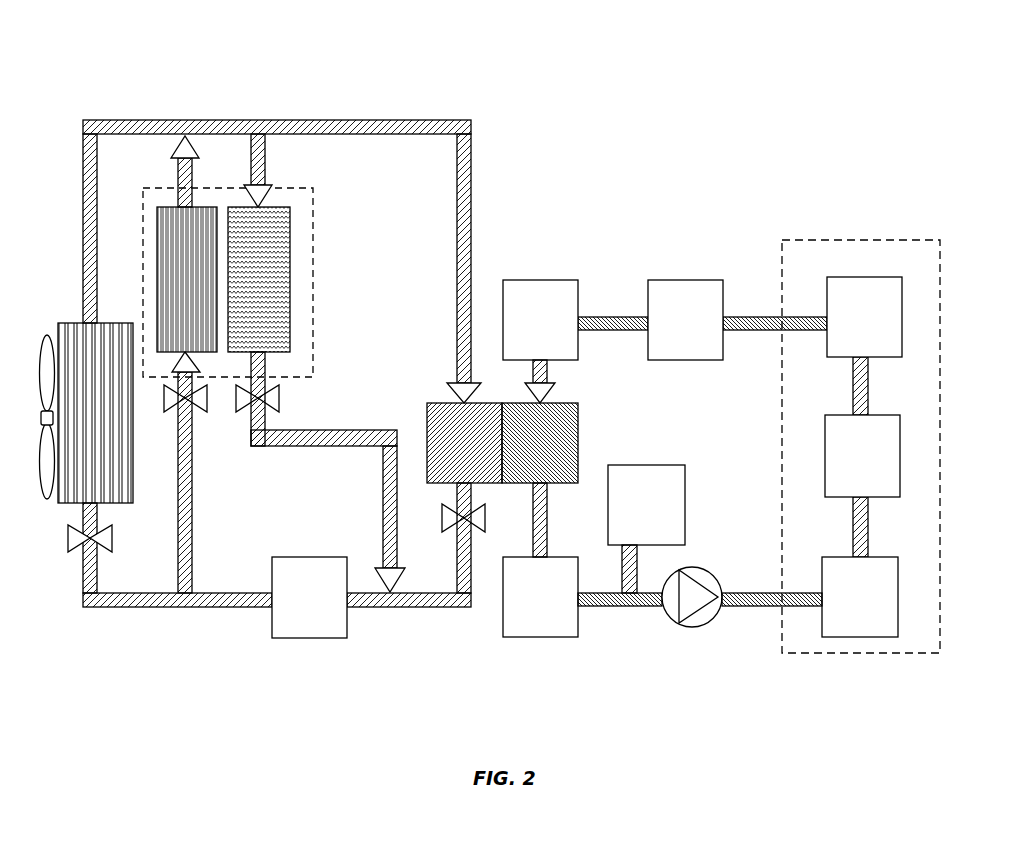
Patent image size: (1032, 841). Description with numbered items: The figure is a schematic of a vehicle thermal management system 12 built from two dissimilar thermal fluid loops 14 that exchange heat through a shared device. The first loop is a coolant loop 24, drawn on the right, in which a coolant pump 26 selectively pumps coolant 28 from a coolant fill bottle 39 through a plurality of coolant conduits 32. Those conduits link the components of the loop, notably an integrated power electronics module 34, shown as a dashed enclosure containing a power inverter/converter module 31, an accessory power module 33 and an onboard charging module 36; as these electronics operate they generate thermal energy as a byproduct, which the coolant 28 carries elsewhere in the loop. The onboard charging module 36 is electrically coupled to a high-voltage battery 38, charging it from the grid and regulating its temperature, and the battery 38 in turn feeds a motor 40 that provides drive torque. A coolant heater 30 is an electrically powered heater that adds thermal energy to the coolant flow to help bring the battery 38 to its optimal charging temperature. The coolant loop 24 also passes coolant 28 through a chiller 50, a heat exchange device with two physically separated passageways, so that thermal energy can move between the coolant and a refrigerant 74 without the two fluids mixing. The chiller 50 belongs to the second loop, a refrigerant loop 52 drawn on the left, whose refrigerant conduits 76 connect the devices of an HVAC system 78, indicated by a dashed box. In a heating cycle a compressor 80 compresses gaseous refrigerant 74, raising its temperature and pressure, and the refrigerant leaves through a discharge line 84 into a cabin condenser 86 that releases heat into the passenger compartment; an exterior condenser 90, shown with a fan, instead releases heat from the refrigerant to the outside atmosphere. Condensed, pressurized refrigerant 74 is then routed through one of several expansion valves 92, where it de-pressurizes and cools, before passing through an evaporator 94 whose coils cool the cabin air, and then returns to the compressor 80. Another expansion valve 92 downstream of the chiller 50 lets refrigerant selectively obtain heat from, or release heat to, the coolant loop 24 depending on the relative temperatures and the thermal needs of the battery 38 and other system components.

The thermal management system 12 is at (648, 78).
The dissimilar thermal fluid loops 14 is at (340, 100).
The coolant loop 24 is at (770, 690).
The coolant pump 26 is at (695, 628).
The coolant 28 is at (748, 608).
The coolant heater 30 is at (540, 280).
The power inverter/converter module 31 is at (822, 564).
The coolant conduits 32 is at (628, 608).
The accessory power module 33 is at (825, 456).
The integrated power electronics module 34 is at (828, 412).
The onboard charging module 36 is at (862, 277).
The high-voltage battery 38 is at (528, 640).
The coolant fill bottle 39 is at (667, 465).
The motor 40 is at (687, 280).
The chiller 50 is at (578, 421).
The refrigerant loop 52 is at (189, 640).
The refrigerant 74 is at (437, 607).
The refrigerant conduits 76 is at (368, 608).
The HVAC system 78 is at (247, 255).
The compressor 80 is at (325, 640).
The discharge line 84 is at (216, 590).
The cabin condenser 86 is at (157, 245).
The exterior condenser 90 is at (66, 322).
The expansion valves 92 is at (68, 539).
The evaporator 94 is at (292, 236).